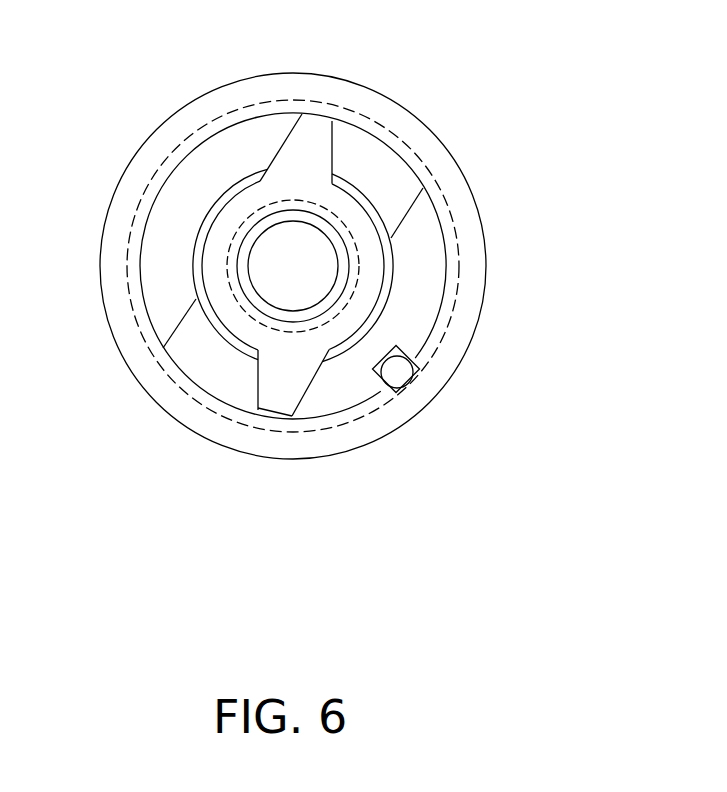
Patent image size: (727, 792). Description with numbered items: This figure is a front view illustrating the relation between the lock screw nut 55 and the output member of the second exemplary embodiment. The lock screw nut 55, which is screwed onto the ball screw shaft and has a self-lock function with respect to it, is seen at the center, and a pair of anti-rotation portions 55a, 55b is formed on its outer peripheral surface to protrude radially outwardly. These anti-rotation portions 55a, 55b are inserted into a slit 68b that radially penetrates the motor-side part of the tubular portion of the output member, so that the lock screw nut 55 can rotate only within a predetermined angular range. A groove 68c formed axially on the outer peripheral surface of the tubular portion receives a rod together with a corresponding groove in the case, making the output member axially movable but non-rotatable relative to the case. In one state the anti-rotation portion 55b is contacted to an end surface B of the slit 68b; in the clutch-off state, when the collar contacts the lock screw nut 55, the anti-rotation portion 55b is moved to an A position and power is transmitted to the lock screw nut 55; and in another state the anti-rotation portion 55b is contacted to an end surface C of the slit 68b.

The lock screw nut 55 is at (372, 260).
The anti-rotation portion 55a is at (310, 132).
The anti-rotation portion 55b is at (272, 398).
The slit 68b is at (358, 148).
The groove 68c is at (388, 362).
The A position A is at (207, 372).
The end surface B is at (314, 381).
The end surface C is at (173, 328).